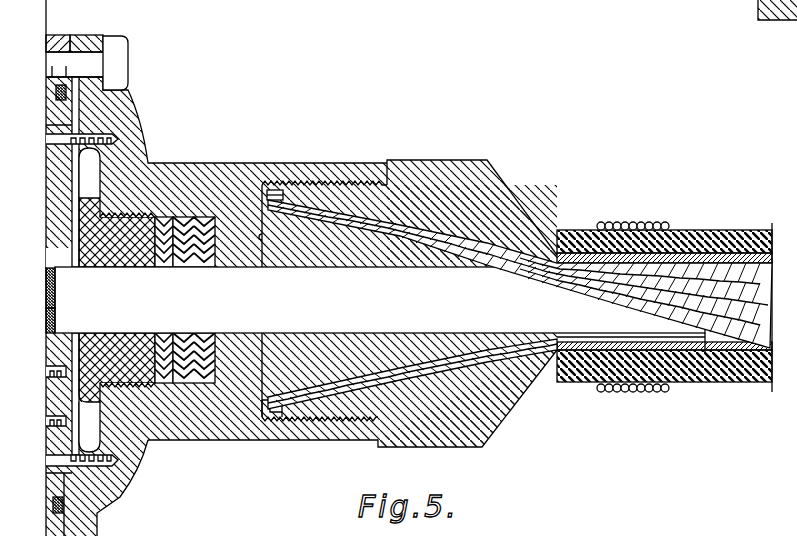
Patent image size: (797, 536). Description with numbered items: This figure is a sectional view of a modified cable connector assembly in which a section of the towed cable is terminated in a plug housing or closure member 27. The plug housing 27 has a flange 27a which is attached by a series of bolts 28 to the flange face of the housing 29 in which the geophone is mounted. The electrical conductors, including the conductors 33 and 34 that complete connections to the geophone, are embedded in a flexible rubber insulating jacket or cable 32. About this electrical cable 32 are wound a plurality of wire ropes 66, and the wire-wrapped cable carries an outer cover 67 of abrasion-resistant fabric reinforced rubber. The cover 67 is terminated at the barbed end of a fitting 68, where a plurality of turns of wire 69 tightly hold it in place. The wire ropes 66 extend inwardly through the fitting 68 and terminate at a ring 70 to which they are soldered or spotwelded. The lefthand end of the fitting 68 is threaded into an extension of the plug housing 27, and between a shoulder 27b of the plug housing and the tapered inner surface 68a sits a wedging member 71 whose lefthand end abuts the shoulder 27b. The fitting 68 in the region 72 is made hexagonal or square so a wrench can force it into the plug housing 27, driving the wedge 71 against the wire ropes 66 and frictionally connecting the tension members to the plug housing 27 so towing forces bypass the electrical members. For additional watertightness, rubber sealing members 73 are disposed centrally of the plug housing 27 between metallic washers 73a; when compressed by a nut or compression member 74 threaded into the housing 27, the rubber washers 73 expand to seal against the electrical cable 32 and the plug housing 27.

The plug housing 27 is at (133, 173).
The flange 27a is at (88, 42).
The shoulder 27b is at (257, 233).
The bolts 28 is at (117, 67).
The housing 29 is at (50, 43).
The insulating jacket or cable 32 is at (112, 303).
The conductor 33 is at (47, 310).
The conductor 34 is at (45, 325).
The wire ropes 66 is at (390, 230).
The outer cover 67 is at (698, 230).
The fitting 68 is at (497, 207).
The tapered inner surface 68a is at (418, 227).
The turns of wire 69 is at (613, 222).
The ring 70 is at (280, 190).
The wedging member 71 is at (323, 240).
The hexagonal or square region 72 is at (403, 440).
The sealing members 73 is at (172, 340).
The metallic washers 73a is at (157, 267).
The nut or compression member 74 is at (123, 343).